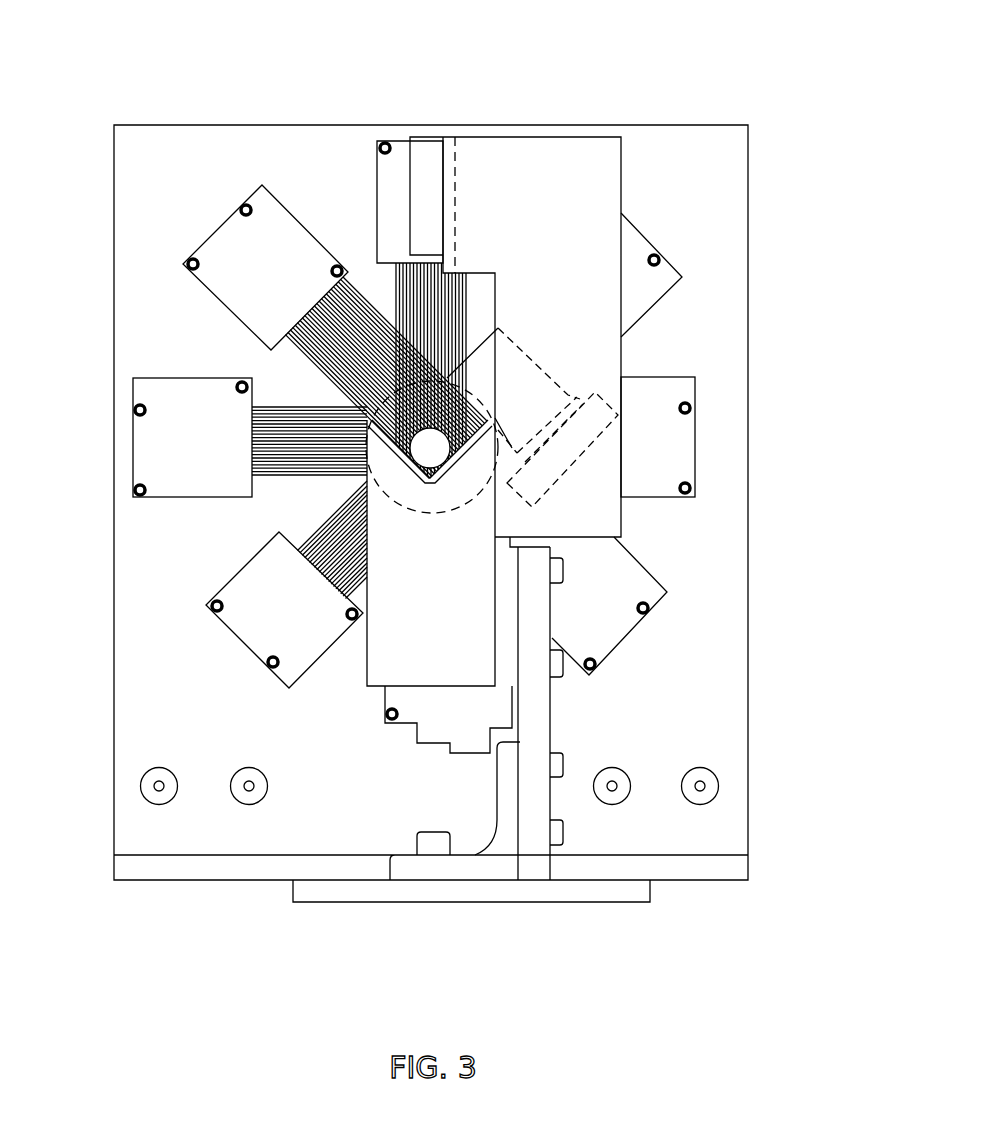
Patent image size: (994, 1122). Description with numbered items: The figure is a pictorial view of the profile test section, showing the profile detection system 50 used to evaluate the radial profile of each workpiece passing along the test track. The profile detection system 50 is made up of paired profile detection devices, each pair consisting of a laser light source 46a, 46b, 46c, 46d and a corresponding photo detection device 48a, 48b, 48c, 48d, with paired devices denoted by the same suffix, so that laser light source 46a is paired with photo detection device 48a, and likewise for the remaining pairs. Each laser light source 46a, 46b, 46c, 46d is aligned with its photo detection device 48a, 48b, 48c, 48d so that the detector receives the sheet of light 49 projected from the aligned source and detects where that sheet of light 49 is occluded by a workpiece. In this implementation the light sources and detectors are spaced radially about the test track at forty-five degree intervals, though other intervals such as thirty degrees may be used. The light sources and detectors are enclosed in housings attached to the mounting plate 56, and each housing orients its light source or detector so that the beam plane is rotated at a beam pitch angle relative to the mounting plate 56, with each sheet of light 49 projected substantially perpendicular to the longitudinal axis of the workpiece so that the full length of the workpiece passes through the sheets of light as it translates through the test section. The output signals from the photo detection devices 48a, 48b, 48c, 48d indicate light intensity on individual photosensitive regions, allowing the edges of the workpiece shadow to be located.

The profile detection system 50 is at (655, 66).
The mounting plate 56 is at (730, 722).
The laser light source 46a is at (382, 178).
The laser light source 46b is at (208, 278).
The laser light source 46c is at (197, 482).
The laser light source 46d is at (233, 617).
The photo detection device 48a is at (393, 700).
The photo detection device 48b is at (645, 593).
The photo detection device 48c is at (676, 438).
The photo detection device 48d is at (652, 298).
The sheet of light 49 is at (447, 305).